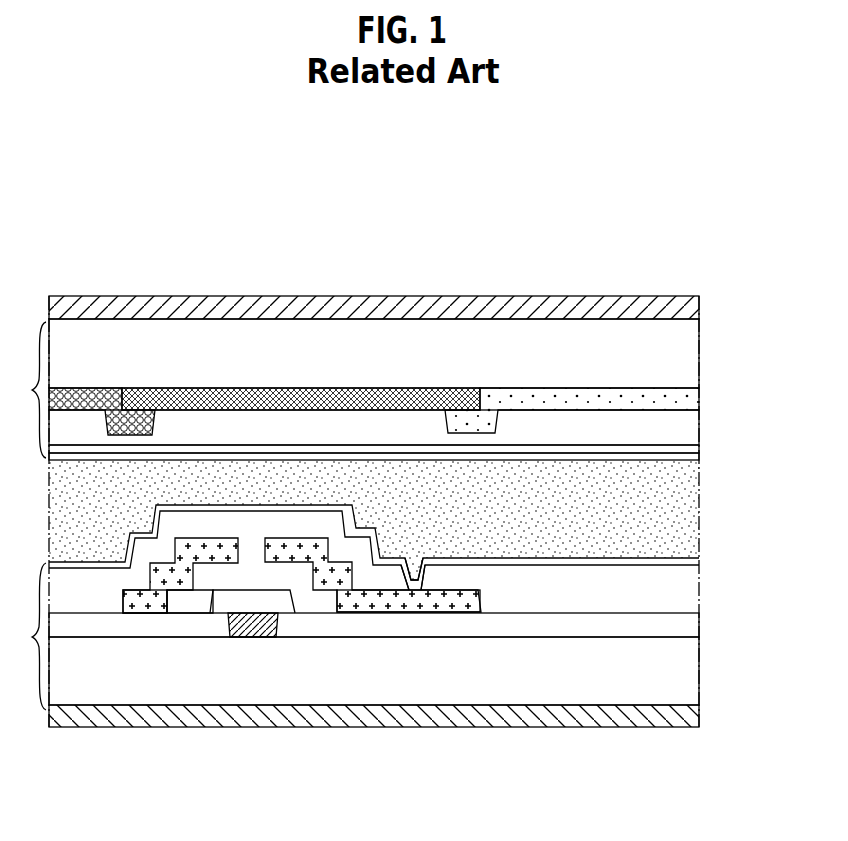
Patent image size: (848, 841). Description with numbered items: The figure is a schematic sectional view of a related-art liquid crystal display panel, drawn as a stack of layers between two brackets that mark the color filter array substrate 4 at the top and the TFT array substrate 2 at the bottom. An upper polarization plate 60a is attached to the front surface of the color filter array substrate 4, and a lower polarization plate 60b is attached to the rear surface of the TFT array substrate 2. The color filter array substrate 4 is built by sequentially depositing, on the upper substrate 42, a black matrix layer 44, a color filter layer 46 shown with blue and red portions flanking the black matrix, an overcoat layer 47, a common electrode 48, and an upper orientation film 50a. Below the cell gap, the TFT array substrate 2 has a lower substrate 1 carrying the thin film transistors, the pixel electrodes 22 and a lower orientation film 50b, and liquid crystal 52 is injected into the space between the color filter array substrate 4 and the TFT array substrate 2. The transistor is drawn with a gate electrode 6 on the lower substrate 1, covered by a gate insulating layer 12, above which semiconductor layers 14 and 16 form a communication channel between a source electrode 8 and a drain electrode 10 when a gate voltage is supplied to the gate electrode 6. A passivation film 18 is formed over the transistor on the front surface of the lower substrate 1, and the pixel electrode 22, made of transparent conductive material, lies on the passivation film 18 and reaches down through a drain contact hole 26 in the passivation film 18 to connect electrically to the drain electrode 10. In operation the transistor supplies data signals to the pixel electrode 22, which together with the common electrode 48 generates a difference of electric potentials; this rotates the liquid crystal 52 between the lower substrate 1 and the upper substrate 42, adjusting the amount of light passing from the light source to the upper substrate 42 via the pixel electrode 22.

The lower substrate 1 is at (700, 673).
The TFT array substrate 2 is at (26, 636).
The color filter array substrate 4 is at (26, 390).
The gate electrode 6 is at (256, 637).
The source electrode 8 is at (143, 600).
The drain electrode 10 is at (385, 598).
The gate insulating layer 12 is at (700, 625).
The semiconductor layer 14 is at (191, 597).
The semiconductor layer 16 is at (323, 590).
The passivation film 18 is at (700, 592).
The pixel electrode 22 is at (700, 562).
The drain contact hole 26 is at (418, 575).
The upper substrate 42 is at (700, 360).
The black matrix layer 44 is at (275, 398).
The color filter layer 46 is at (700, 398).
The overcoat layer 47 is at (700, 428).
The common electrode 48 is at (700, 450).
The upper orientation film 50a is at (700, 462).
The lower orientation film 50b is at (700, 557).
The liquid crystal 52 is at (700, 508).
The upper polarization plate 60a is at (700, 307).
The lower polarization plate 60b is at (700, 715).